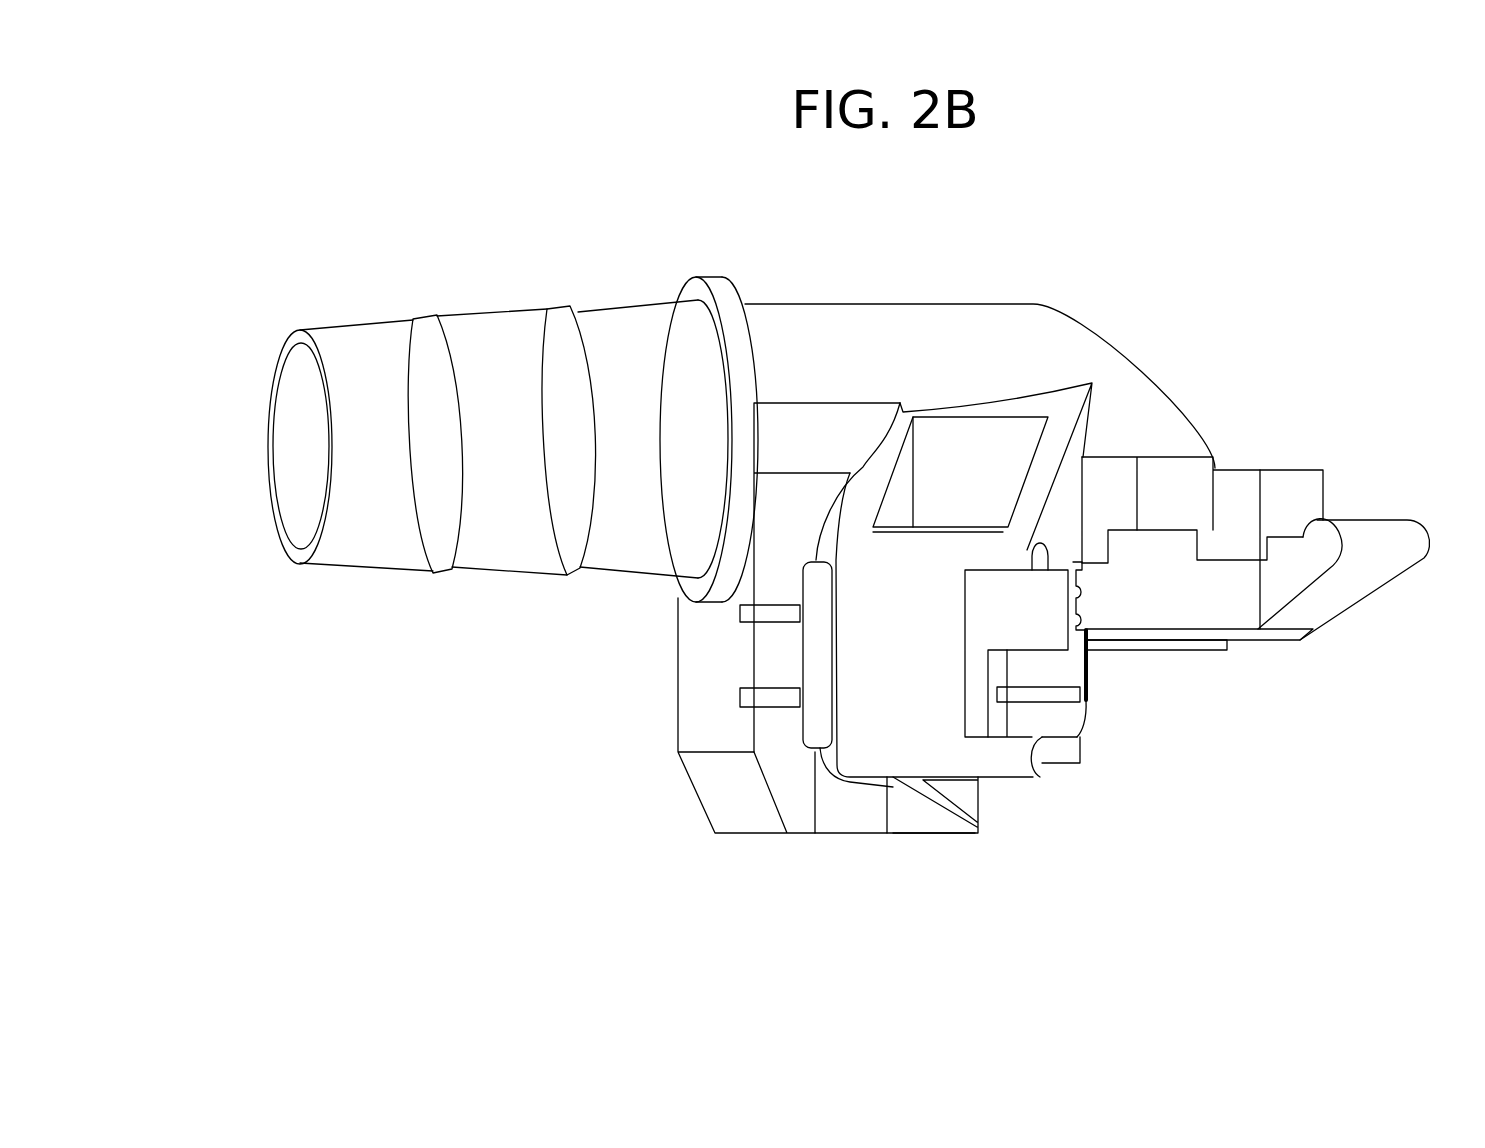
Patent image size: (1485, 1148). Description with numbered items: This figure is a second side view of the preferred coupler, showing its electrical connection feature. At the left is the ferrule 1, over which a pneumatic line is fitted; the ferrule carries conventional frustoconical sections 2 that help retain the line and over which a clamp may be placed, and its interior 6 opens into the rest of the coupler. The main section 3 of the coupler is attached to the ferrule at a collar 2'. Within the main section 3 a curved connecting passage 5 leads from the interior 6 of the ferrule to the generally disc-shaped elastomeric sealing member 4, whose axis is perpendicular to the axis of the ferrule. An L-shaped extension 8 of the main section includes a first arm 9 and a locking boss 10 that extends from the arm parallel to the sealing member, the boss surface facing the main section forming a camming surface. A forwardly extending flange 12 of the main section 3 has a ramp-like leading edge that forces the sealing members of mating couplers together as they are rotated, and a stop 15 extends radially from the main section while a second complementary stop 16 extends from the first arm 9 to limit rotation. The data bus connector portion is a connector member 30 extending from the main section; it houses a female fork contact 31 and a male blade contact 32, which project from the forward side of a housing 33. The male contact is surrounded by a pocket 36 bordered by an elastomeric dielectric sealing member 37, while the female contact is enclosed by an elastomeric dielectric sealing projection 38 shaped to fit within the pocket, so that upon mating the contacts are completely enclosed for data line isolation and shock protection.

The ferrule 1 is at (440, 640).
The frustoconical sections 2 is at (499, 404).
The collar 2' is at (722, 416).
The main section 3 is at (1186, 346).
The elastomeric sealing member 4 is at (1217, 645).
The curved connecting passage 5 is at (960, 328).
The interior of the ferrule 6 is at (292, 463).
The L-shaped extension 8 is at (832, 820).
The first arm 9 is at (697, 672).
The locking boss 10 is at (920, 817).
The forwardly extending flange 12 is at (1390, 575).
The stop 15 is at (1200, 503).
The second complementary stop 16 is at (950, 823).
The connector member 30 is at (1057, 437).
The female fork contact 31 is at (1083, 609).
The male blade contact 32 is at (1063, 690).
The housing 33 is at (870, 747).
The pocket 36 is at (1062, 722).
The elastomeric dielectric sealing member 37 is at (1058, 748).
The elastomeric dielectric sealing projection 38 is at (998, 605).